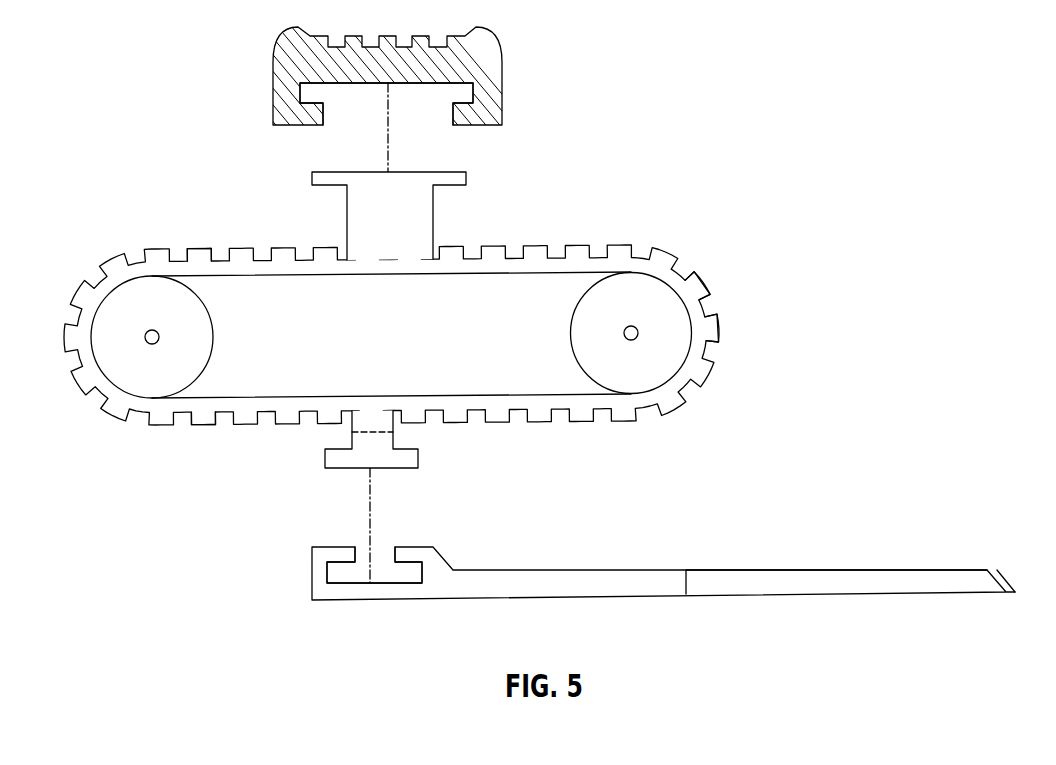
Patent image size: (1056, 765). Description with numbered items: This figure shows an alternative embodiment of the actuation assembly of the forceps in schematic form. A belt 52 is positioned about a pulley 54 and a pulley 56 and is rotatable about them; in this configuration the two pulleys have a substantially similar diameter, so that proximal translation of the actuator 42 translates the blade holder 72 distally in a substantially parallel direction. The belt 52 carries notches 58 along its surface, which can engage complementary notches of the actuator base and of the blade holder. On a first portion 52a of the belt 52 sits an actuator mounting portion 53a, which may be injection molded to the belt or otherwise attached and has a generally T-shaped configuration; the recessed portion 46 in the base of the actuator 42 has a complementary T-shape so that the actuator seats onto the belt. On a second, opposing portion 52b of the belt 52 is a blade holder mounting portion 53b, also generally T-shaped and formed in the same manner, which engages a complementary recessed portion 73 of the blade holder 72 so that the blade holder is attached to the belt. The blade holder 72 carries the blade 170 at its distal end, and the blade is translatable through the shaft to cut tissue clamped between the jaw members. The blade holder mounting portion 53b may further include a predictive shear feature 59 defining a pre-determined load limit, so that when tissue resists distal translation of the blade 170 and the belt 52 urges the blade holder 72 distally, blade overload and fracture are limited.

The actuator 42 is at (493, 52).
The recessed portion 46 is at (314, 93).
The belt 52 is at (580, 260).
The first portion of belt 52a is at (200, 253).
The second, opposing portion of belt 52b is at (203, 418).
The actuator mounting portion 53a is at (422, 222).
The blade holder mounting portion 53b is at (410, 458).
The pulley 54 is at (130, 362).
The pulley 56 is at (657, 365).
The notches 58 is at (697, 288).
The predictive shear feature 59 is at (373, 440).
The blade holder 72 is at (565, 583).
The recessed portion 73 is at (402, 576).
The blade 170 is at (838, 583).